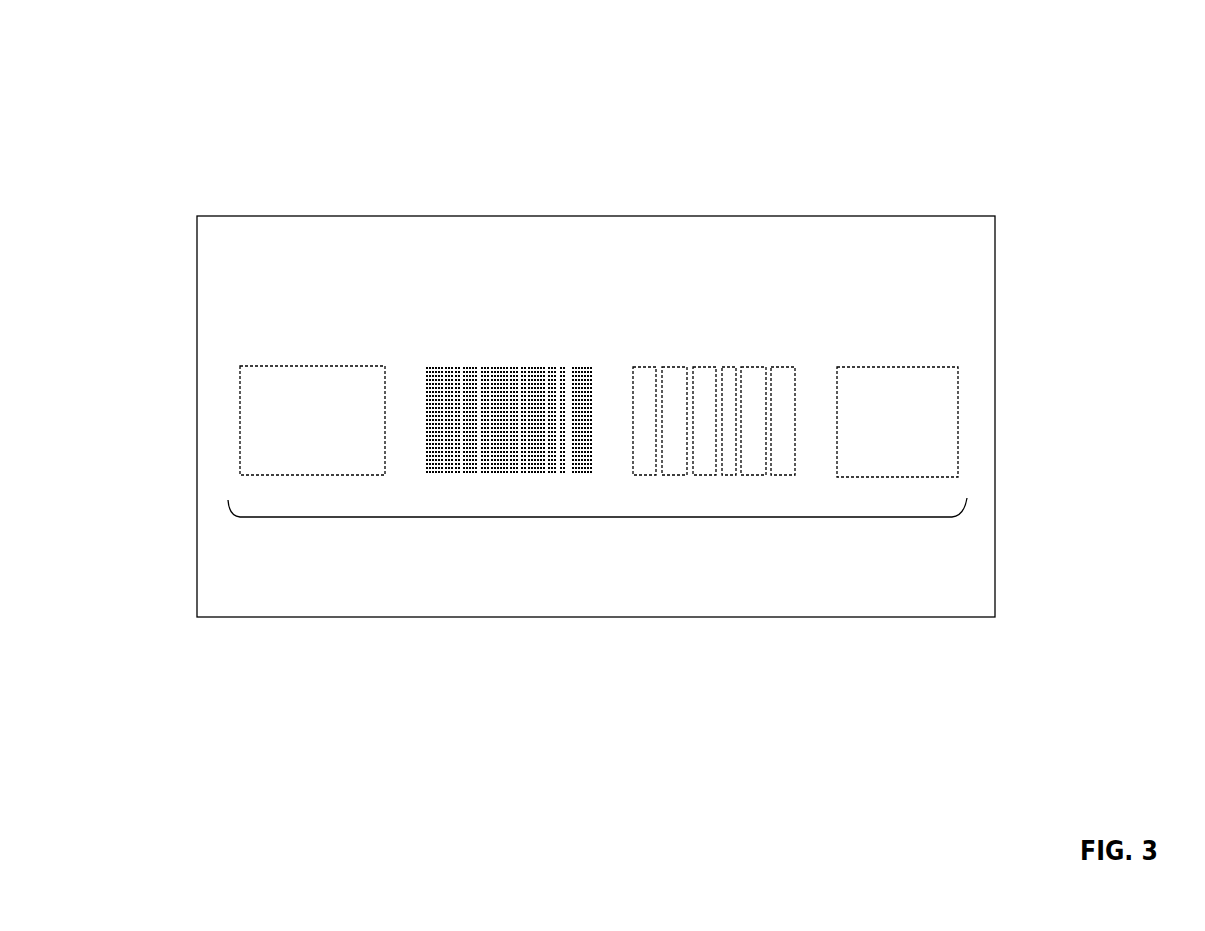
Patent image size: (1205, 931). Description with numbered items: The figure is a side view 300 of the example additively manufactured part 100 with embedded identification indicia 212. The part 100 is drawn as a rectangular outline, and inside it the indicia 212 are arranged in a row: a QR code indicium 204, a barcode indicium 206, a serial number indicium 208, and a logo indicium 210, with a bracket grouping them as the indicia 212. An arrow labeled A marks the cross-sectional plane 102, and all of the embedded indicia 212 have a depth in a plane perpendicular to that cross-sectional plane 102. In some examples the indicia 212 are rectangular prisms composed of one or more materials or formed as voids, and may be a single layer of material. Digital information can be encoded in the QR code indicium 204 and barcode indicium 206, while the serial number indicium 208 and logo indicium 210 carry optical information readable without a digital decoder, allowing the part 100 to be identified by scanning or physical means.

The side view 300 is at (978, 80).
The additively manufactured part 100 is at (893, 147).
The cross-sectional plane 102 is at (186, 407).
The QR code indicium 204 is at (293, 333).
The barcode indicium 206 is at (492, 337).
The serial number indicium 208 is at (692, 337).
The logo indicium 210 is at (882, 335).
The indicia 212 is at (598, 518).